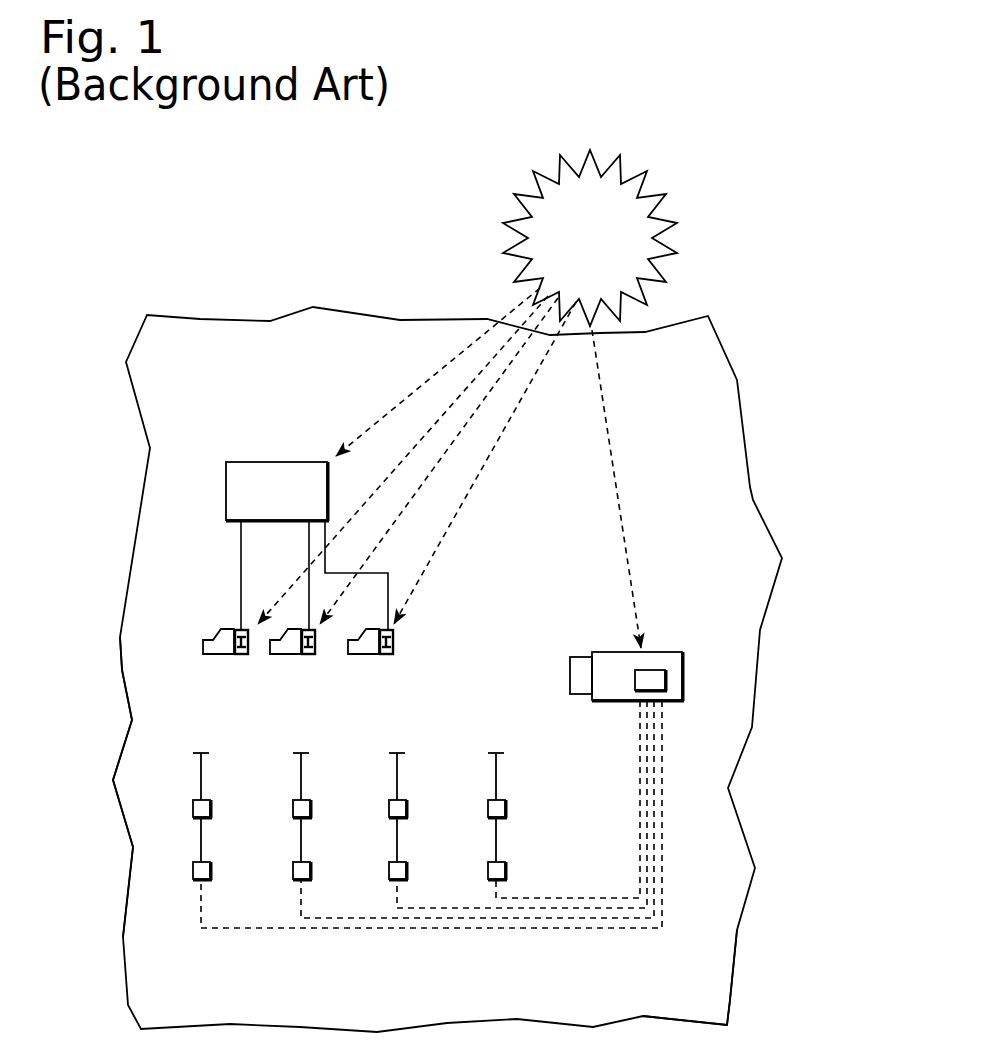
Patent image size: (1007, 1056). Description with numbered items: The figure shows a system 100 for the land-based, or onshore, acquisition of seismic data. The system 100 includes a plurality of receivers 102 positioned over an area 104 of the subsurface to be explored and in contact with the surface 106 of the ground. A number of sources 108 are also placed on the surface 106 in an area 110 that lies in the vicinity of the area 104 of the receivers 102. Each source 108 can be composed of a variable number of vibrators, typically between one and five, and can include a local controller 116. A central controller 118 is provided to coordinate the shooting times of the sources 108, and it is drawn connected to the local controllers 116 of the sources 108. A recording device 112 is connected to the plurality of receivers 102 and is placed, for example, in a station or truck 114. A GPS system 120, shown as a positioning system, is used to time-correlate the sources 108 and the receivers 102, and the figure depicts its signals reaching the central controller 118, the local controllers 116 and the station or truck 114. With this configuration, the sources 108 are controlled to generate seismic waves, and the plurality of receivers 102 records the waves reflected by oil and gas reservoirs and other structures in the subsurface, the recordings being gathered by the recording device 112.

The system 100 is at (630, 90).
The receivers 102 is at (488, 868).
The area 104 is at (720, 922).
The surface 106 is at (112, 667).
The sources 108 is at (220, 647).
The area 110 is at (740, 510).
The recording device 112 is at (652, 680).
The station/truck 114 is at (672, 640).
The local controller 116 is at (243, 655).
The central controller 118 is at (248, 462).
The GPS system 120 is at (652, 188).